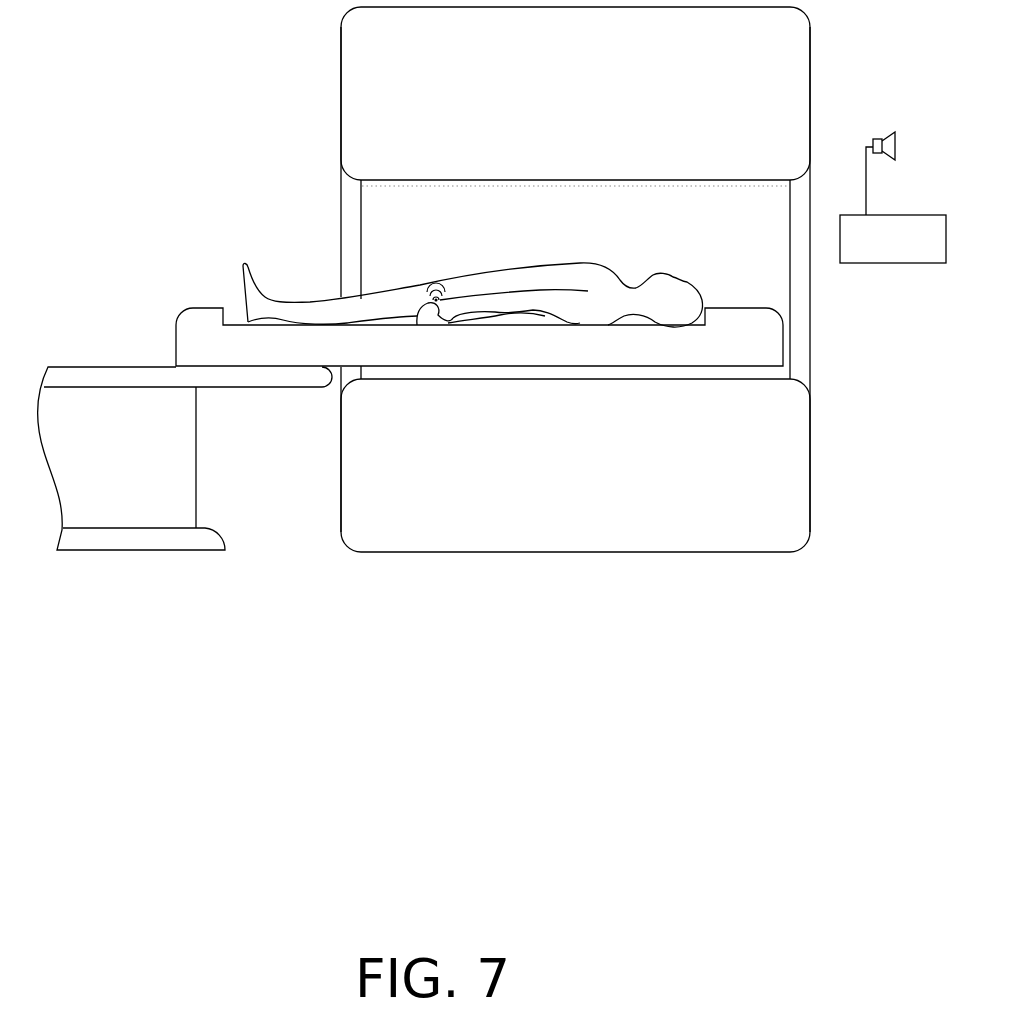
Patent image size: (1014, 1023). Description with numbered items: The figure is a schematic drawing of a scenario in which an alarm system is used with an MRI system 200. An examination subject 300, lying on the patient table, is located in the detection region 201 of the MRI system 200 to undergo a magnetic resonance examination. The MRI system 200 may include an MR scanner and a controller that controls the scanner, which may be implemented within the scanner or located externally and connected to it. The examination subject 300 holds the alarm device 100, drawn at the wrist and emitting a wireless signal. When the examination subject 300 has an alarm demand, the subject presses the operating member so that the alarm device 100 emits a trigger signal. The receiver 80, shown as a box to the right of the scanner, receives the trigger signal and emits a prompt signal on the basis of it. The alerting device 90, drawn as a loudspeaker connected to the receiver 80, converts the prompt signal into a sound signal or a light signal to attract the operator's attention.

The MRI system 200 is at (190, 154).
The detection region 201 is at (597, 227).
The examination subject 300 is at (521, 273).
The alarm device 100 is at (425, 305).
The alerting device 90 is at (887, 130).
The receiver 80 is at (940, 256).